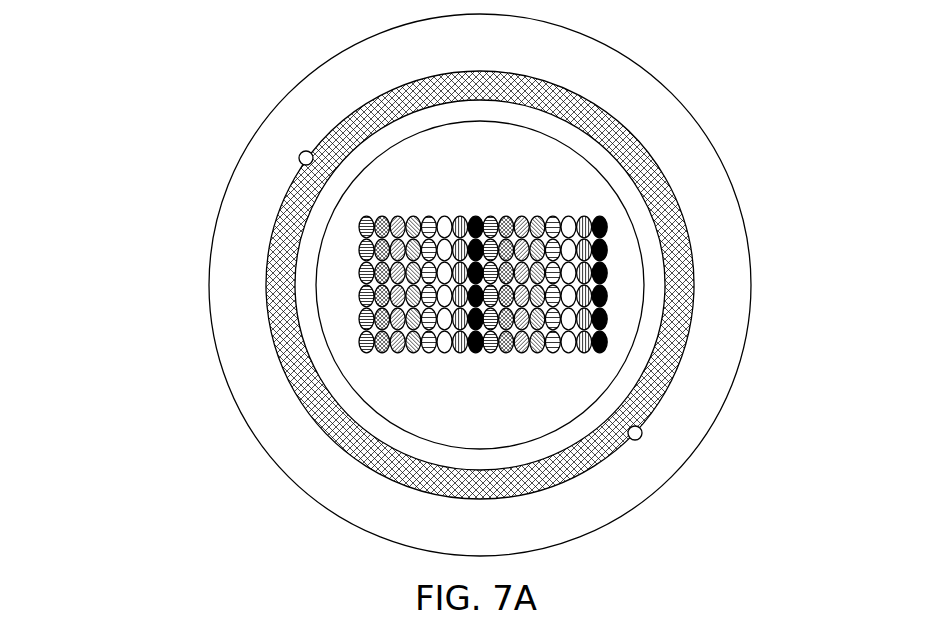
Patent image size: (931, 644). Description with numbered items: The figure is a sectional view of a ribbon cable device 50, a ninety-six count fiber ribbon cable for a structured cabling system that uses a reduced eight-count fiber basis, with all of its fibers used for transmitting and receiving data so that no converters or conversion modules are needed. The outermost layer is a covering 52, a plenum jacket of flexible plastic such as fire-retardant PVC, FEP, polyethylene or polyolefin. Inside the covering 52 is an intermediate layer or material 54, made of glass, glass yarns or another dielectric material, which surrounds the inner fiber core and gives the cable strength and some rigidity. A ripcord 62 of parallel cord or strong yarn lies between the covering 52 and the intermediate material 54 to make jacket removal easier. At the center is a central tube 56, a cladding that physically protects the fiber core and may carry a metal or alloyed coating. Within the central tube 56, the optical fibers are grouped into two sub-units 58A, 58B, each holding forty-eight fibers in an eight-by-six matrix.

The ribbon cable device 50 is at (107, 229).
The covering 52 is at (717, 367).
The intermediate layer or material 54 is at (597, 457).
The central tube 56 is at (536, 453).
The first sub-unit 58A is at (482, 360).
The second sub-unit 58B is at (607, 360).
The ripcord 62 is at (299, 157).